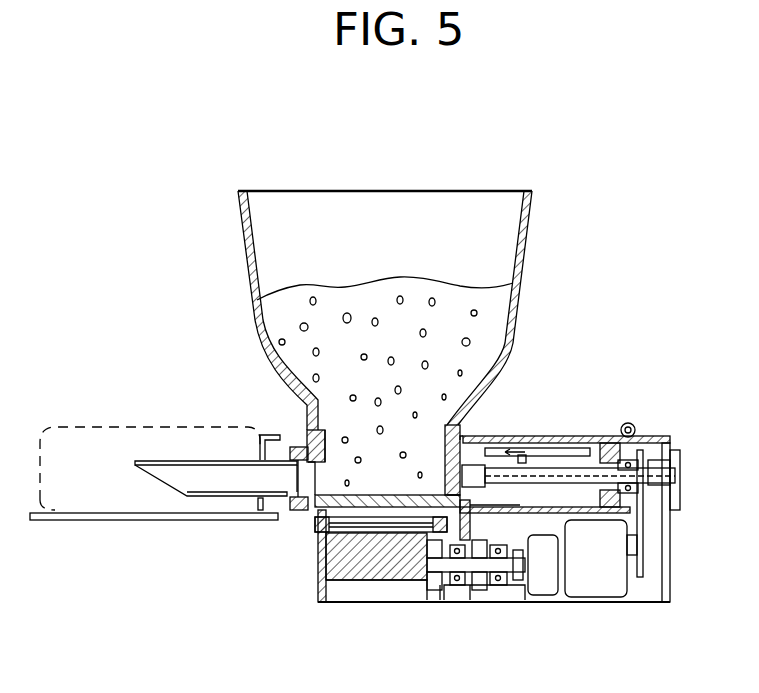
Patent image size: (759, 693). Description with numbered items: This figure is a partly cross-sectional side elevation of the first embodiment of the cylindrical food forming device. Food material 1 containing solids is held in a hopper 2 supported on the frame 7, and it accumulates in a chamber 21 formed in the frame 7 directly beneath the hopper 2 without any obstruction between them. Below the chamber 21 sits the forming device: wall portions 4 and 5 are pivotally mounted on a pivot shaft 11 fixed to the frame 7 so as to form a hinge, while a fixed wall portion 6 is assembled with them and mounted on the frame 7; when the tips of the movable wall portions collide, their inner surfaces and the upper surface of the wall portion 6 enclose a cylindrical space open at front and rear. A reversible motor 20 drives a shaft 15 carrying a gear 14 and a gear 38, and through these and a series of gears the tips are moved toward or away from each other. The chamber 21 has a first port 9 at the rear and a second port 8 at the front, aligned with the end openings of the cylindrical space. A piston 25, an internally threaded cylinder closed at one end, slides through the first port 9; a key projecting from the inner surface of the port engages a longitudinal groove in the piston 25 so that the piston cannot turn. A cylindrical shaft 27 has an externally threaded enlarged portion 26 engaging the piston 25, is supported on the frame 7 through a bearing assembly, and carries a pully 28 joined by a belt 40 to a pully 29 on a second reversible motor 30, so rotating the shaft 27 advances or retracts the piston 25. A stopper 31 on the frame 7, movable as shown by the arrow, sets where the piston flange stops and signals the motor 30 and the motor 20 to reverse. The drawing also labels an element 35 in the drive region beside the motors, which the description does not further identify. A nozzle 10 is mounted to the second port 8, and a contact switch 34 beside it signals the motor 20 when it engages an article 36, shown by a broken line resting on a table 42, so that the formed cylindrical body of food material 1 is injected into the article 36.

The food material 1 is at (508, 280).
The hopper 2 is at (518, 305).
The wall portion 4 is at (345, 522).
The wall portion 5 is at (360, 600).
The wall portion 6 is at (380, 600).
The frame 7 is at (312, 438).
The second port 8 is at (300, 500).
The first port 9 is at (448, 472).
The nozzle 10 is at (165, 461).
The pivot shaft 11 is at (345, 520).
The gear 14 is at (438, 600).
The shaft 15 is at (512, 600).
The reversible motor 20 is at (545, 600).
The chamber 21 is at (300, 410).
The piston 25 is at (520, 440).
The enlarged portion 26 is at (478, 470).
The cylindrical shaft 27 is at (582, 468).
The pully 28 is at (637, 440).
The pully 29 is at (668, 600).
The reversible motor 30 is at (604, 590).
The stopper 31 is at (542, 452).
The contact switch 34 is at (262, 436).
The motor 35 is at (550, 580).
The article 36 is at (95, 427).
The gear 38 is at (490, 600).
The belt 40 is at (640, 578).
The table 42 is at (148, 520).